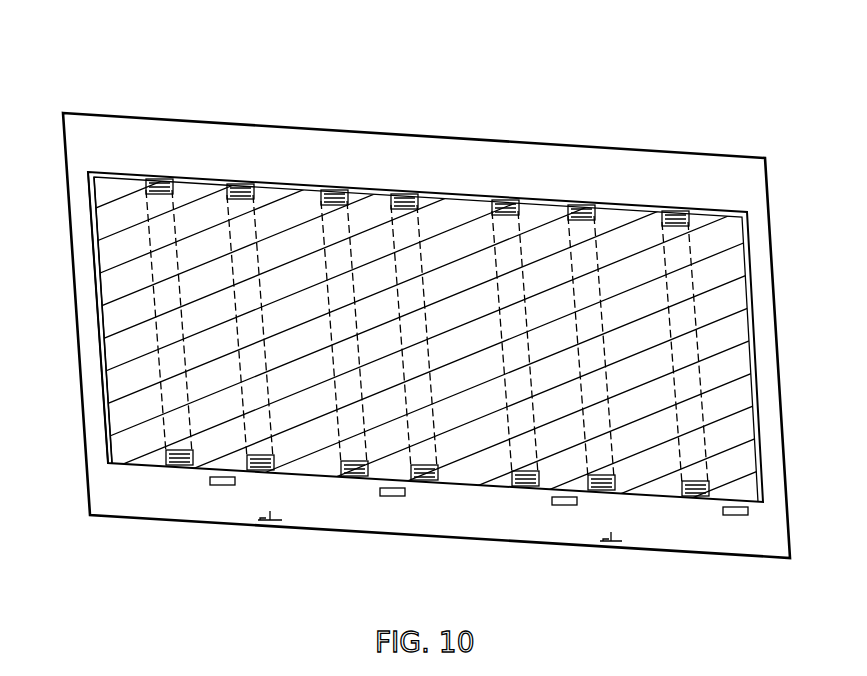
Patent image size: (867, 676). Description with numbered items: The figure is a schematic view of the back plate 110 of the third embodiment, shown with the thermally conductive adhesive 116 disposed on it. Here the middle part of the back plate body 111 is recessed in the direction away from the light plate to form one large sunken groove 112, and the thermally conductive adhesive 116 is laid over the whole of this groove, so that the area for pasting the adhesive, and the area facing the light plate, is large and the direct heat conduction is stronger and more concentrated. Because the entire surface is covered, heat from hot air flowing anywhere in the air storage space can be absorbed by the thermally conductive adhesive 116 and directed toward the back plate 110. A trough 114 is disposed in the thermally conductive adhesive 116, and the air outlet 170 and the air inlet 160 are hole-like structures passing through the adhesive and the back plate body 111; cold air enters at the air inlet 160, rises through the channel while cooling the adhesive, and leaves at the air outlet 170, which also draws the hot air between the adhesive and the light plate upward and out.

The back plate 110 is at (108, 41).
The back plate body 111 is at (248, 160).
The sunken groove 112 is at (545, 200).
The trough 114 is at (163, 248).
The thermally conductive adhesive 116 is at (440, 220).
The air inlet 160 is at (185, 468).
The air outlet 170 is at (150, 180).